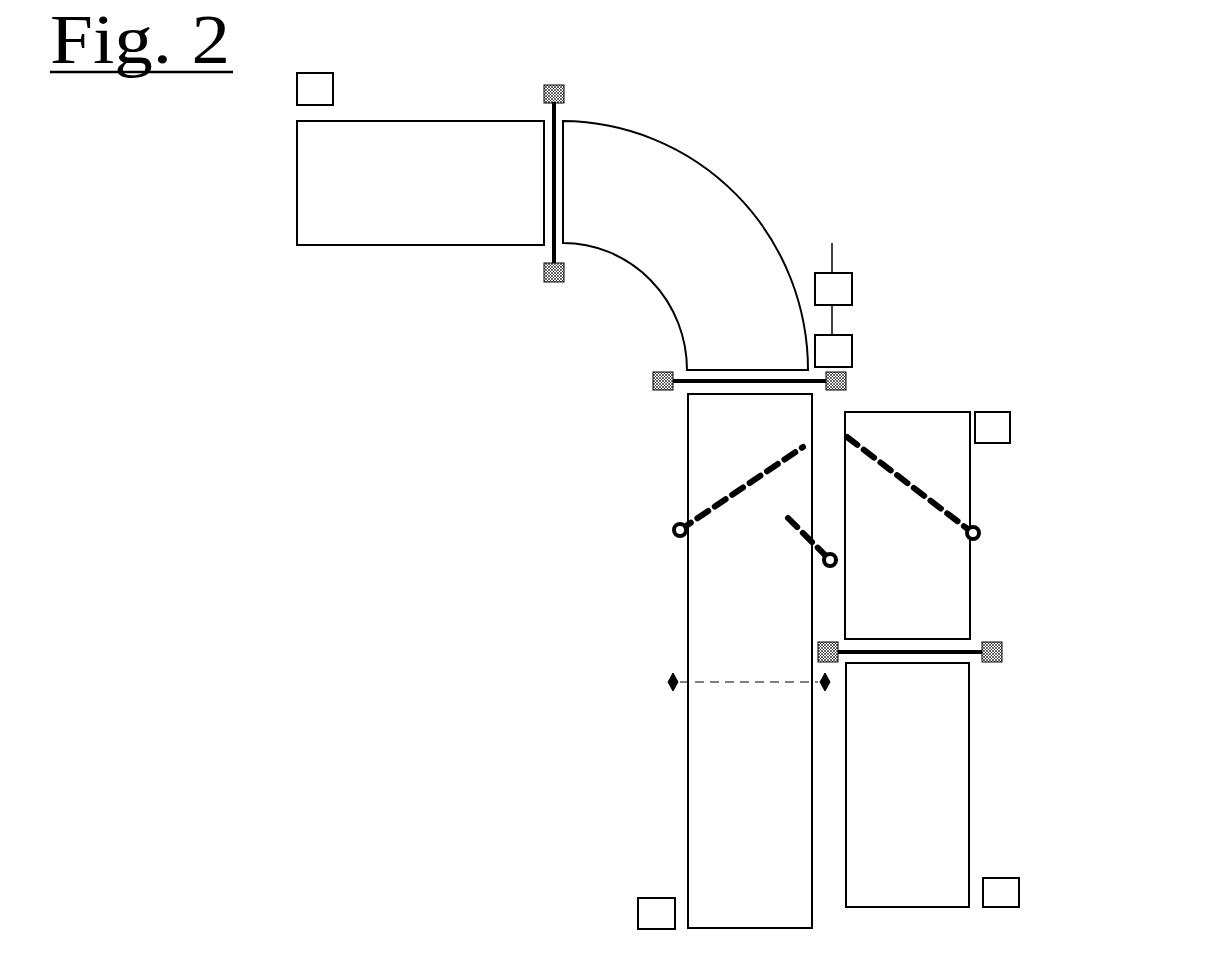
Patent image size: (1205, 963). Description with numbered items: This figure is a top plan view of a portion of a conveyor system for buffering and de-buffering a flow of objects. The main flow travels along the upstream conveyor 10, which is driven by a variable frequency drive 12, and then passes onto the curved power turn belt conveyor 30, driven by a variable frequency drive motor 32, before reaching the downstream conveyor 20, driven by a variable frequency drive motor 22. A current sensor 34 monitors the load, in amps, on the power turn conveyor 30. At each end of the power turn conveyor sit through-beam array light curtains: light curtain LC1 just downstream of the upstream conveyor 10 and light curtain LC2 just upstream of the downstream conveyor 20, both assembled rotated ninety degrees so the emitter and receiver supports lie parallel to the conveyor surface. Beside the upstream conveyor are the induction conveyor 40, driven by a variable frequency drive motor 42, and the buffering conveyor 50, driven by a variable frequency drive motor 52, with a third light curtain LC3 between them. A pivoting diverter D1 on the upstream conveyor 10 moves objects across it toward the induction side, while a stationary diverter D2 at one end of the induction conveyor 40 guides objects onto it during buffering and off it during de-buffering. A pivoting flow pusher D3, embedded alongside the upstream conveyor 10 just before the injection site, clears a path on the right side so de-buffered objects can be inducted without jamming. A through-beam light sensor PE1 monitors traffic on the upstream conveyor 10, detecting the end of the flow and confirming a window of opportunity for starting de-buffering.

The upstream conveyor 10 is at (697, 755).
The variable frequency drive motor 12 is at (660, 908).
The downstream conveyor 20 is at (342, 180).
The variable frequency drive motor 22 is at (408, 56).
The power turn belt conveyor 30 is at (663, 213).
The variable frequency drive motor 32 is at (977, 362).
The current sensor 34 is at (1025, 294).
The induction conveyor 40 is at (857, 591).
The variable frequency drive motor 42 is at (1003, 430).
The buffering conveyor 50 is at (855, 763).
The variable frequency drive motor 52 is at (1013, 895).
The light curtain LC1 is at (615, 386).
The light curtain LC2 is at (740, 67).
The light curtain LC3 is at (976, 637).
The diverter D1 is at (702, 512).
The diverter D2 is at (950, 513).
The flow pusher D3 is at (820, 550).
The through beam light sensor PE1 is at (666, 690).